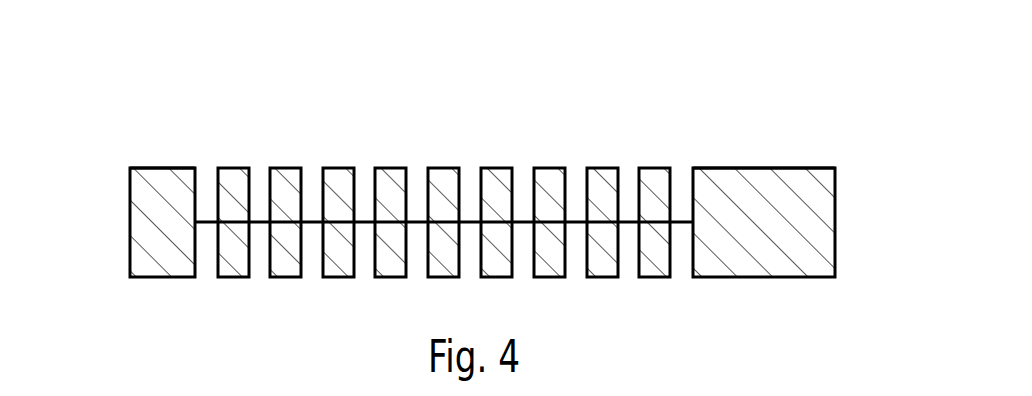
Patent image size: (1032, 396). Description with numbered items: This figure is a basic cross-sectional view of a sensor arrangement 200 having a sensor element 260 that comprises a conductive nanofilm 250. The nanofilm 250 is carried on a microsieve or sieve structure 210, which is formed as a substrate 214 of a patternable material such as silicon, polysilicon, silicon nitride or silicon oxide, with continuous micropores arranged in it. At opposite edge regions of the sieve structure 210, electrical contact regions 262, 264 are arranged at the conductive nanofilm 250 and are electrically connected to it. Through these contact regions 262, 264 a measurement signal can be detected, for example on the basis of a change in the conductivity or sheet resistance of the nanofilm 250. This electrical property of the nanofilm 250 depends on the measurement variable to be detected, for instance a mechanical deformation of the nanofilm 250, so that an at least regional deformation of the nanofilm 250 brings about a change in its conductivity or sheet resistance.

The sensor arrangement 200 is at (268, 81).
The sensor element 260 is at (126, 167).
The electrical contact region 262 is at (173, 166).
The electrical contact region 264 is at (749, 165).
The conductive nanofilm 250 is at (796, 165).
The microsieve 210 is at (830, 165).
The substrate 214 is at (847, 170).